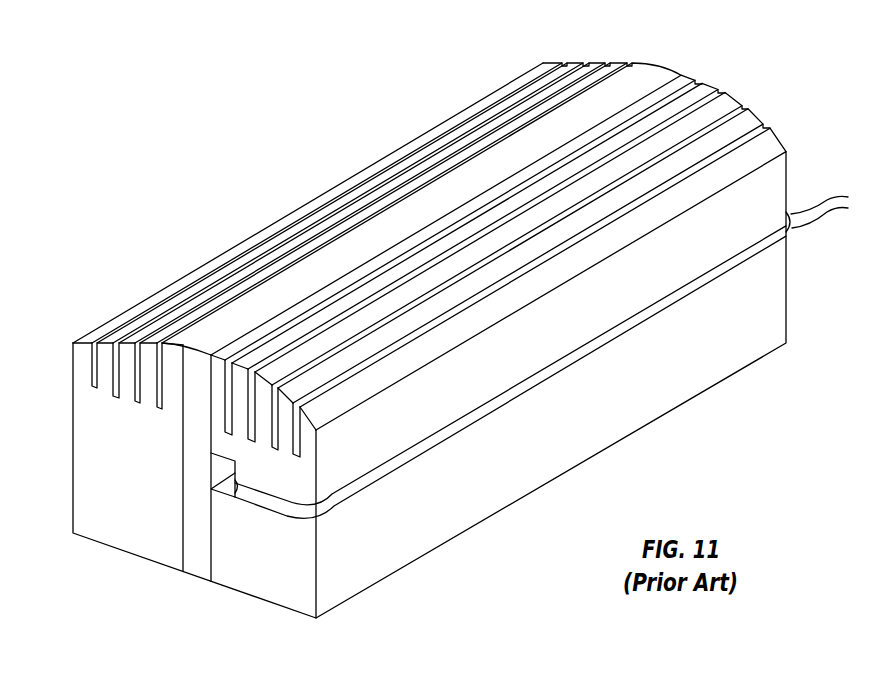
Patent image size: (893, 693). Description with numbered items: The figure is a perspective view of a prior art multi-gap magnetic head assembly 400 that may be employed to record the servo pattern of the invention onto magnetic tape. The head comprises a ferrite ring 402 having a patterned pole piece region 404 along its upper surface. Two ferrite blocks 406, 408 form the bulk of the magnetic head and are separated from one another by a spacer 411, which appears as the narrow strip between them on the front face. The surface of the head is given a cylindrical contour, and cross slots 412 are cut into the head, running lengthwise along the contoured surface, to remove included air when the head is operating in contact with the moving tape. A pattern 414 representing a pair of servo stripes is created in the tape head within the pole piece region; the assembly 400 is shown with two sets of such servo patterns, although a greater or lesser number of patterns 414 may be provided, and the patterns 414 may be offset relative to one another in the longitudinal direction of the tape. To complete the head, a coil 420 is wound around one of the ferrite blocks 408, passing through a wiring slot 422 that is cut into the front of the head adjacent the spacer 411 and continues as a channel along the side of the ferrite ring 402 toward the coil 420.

The magnetic head assembly 400 is at (255, 124).
The ferrite ring 402 is at (500, 512).
The patterned pole piece region 404 is at (656, 82).
The ferrite block 406 is at (275, 594).
The ferrite block 408 is at (115, 537).
The spacer 411 is at (197, 568).
The cross slots 412 is at (93, 373).
The pattern 414 is at (492, 190).
The coil 420 is at (830, 193).
The wiring slot 422 is at (220, 472).